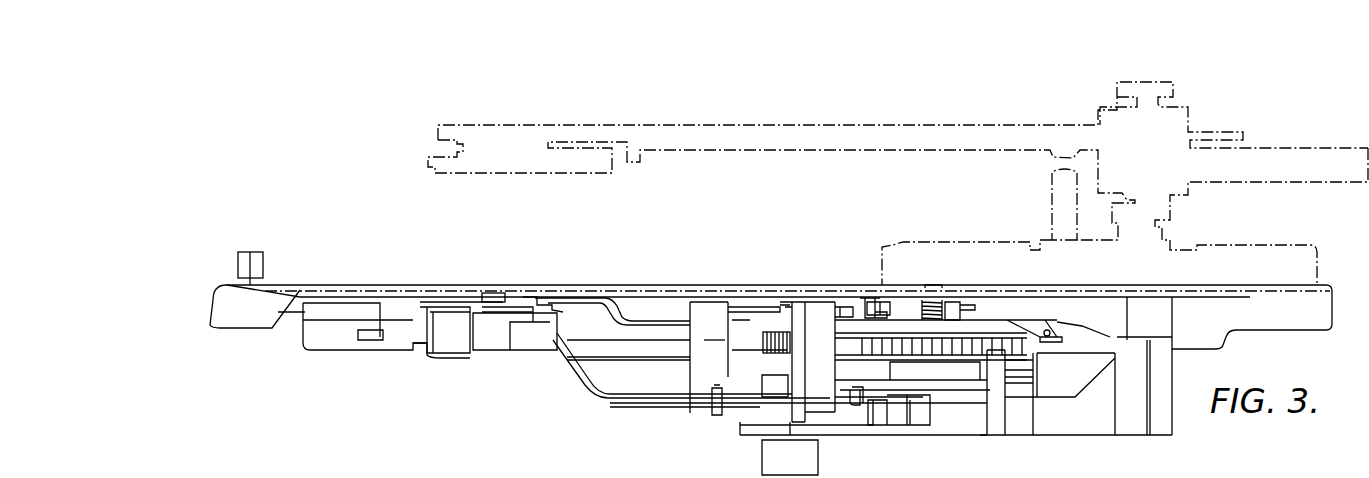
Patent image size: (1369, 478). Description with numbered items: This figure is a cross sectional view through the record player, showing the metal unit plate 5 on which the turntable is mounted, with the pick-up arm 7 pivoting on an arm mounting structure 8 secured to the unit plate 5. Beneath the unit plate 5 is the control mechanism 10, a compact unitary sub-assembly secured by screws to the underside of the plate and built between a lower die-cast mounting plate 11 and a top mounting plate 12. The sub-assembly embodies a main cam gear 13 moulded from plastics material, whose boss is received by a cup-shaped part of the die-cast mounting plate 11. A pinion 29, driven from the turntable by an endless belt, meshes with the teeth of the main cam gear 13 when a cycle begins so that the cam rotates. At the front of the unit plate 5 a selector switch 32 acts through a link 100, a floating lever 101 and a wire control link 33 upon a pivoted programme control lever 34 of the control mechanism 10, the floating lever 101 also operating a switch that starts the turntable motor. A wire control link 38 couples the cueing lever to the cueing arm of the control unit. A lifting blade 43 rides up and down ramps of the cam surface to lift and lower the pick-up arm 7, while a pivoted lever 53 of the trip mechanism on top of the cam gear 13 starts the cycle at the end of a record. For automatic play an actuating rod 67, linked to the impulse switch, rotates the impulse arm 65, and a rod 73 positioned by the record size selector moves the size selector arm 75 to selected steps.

The unit plate 5 is at (492, 290).
The pick-up arm 7 is at (728, 137).
The arm mounting structure 8 is at (1183, 198).
The control mechanism 10 is at (883, 437).
The lower die-cast mounting plate 11 is at (1055, 428).
The top mounting plate 12 is at (827, 290).
The main cam gear 13 is at (1023, 358).
The pinion 29 is at (765, 338).
The selector switch 32 is at (263, 262).
The wire control link 33 is at (672, 298).
The programme control lever 34 is at (820, 400).
The wire control link 38 is at (637, 357).
The lifting blade 43 is at (1093, 332).
The pivoted lever 53 is at (957, 302).
The impulse arm 65 is at (843, 312).
The actuating rod 67 is at (627, 320).
The rod 73 is at (605, 398).
The size selector arm 75 is at (965, 393).
The link 100 is at (452, 303).
The floating lever 101 is at (560, 313).